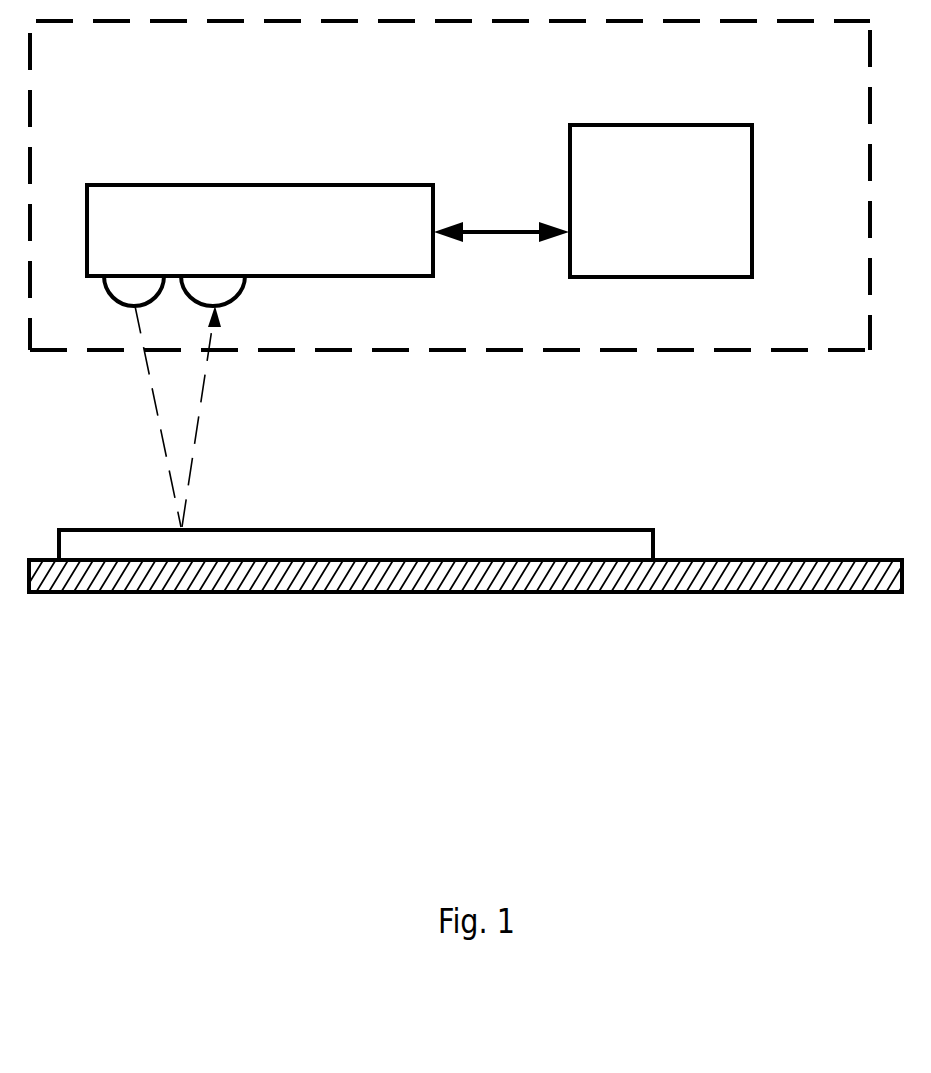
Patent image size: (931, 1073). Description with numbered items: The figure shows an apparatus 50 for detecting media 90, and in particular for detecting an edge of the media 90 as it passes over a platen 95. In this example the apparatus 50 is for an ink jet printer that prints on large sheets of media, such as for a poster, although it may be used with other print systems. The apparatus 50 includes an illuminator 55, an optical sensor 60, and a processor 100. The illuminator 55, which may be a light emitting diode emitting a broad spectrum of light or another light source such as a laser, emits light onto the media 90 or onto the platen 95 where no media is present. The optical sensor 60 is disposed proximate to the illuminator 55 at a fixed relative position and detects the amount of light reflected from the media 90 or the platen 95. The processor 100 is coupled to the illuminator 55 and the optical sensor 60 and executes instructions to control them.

The apparatus 50 is at (115, 74).
The illuminator 55 is at (121, 303).
The optical sensor 60 is at (233, 301).
The media 90 is at (448, 547).
The platen 95 is at (665, 573).
The processor 100 is at (685, 216).